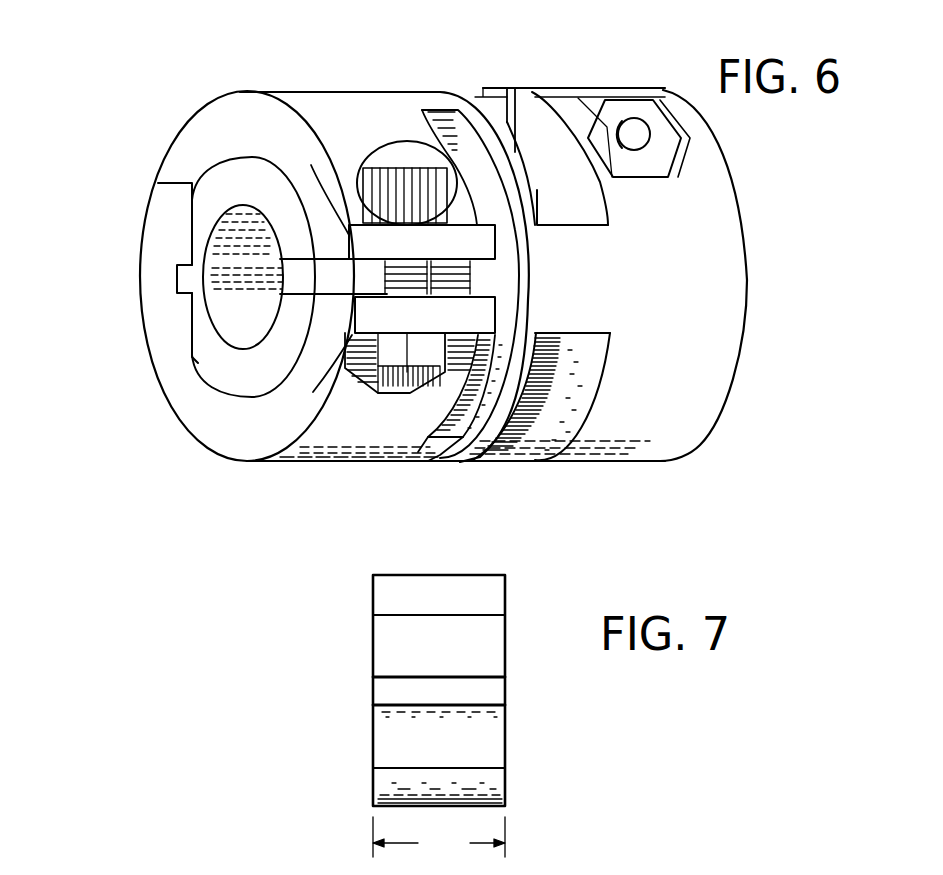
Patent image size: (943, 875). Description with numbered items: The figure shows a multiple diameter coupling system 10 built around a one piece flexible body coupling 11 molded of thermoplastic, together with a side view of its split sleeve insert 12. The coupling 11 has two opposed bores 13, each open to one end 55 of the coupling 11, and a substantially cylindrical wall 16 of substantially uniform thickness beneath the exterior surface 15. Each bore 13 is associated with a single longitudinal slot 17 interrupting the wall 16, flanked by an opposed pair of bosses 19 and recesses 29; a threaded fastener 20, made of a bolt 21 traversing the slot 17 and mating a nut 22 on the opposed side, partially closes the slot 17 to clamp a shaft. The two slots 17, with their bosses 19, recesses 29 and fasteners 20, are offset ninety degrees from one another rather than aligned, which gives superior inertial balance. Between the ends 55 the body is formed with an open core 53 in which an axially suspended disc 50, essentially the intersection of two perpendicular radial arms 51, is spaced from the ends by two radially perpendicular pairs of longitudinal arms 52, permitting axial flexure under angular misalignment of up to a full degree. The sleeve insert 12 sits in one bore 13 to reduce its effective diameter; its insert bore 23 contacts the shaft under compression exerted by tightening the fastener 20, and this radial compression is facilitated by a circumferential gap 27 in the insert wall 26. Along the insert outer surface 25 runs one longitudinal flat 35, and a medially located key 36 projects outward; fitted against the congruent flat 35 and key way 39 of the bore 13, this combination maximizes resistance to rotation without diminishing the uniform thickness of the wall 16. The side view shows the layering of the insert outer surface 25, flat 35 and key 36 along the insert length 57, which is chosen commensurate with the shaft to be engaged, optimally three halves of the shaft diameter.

In FIG. 6, the coupling system 10 is at (98, 92).
In FIG. 6, the coupling 11 is at (737, 365).
In FIG. 6, the sleeve insert 12 is at (232, 173).
In FIG. 7, the sleeve insert 12 is at (527, 748).
In FIG. 6, the bore 13 is at (200, 382).
In FIG. 6, the exterior surface 15 is at (693, 398).
In FIG. 6, the wall 16 is at (168, 232).
In FIG. 6, the longitudinal slot 17 is at (470, 283).
In FIG. 6, the bosses 19 is at (312, 170).
In FIG. 6, the threaded fastener 20 is at (507, 292).
In FIG. 6, the bolt 21 is at (397, 173).
In FIG. 6, the nut 22 is at (380, 357).
In FIG. 6, the insert bore 23 is at (217, 328).
In FIG. 6, the insert outer surface 25 is at (215, 395).
In FIG. 7, the insert outer surface 25 is at (388, 594).
In FIG. 6, the insert wall 26 is at (210, 195).
In FIG. 6, the circumferential gap 27 is at (284, 286).
In FIG. 6, the recesses 29 is at (367, 152).
In FIG. 6, the flat 35 is at (223, 327).
In FIG. 7, the flat 35 is at (390, 645).
In FIG. 6, the key 36 is at (177, 283).
In FIG. 7, the key 36 is at (390, 693).
In FIG. 6, the key way 39 is at (177, 270).
In FIG. 6, the axially suspended disc 50 is at (483, 275).
In FIG. 6, the radial arm 51 is at (513, 175).
In FIG. 6, the longitudinal arm 52 is at (438, 100).
In FIG. 6, the open core 53 is at (593, 255).
In FIG. 6, the end 55 is at (760, 280).
In FIG. 7, the length 57 is at (439, 840).